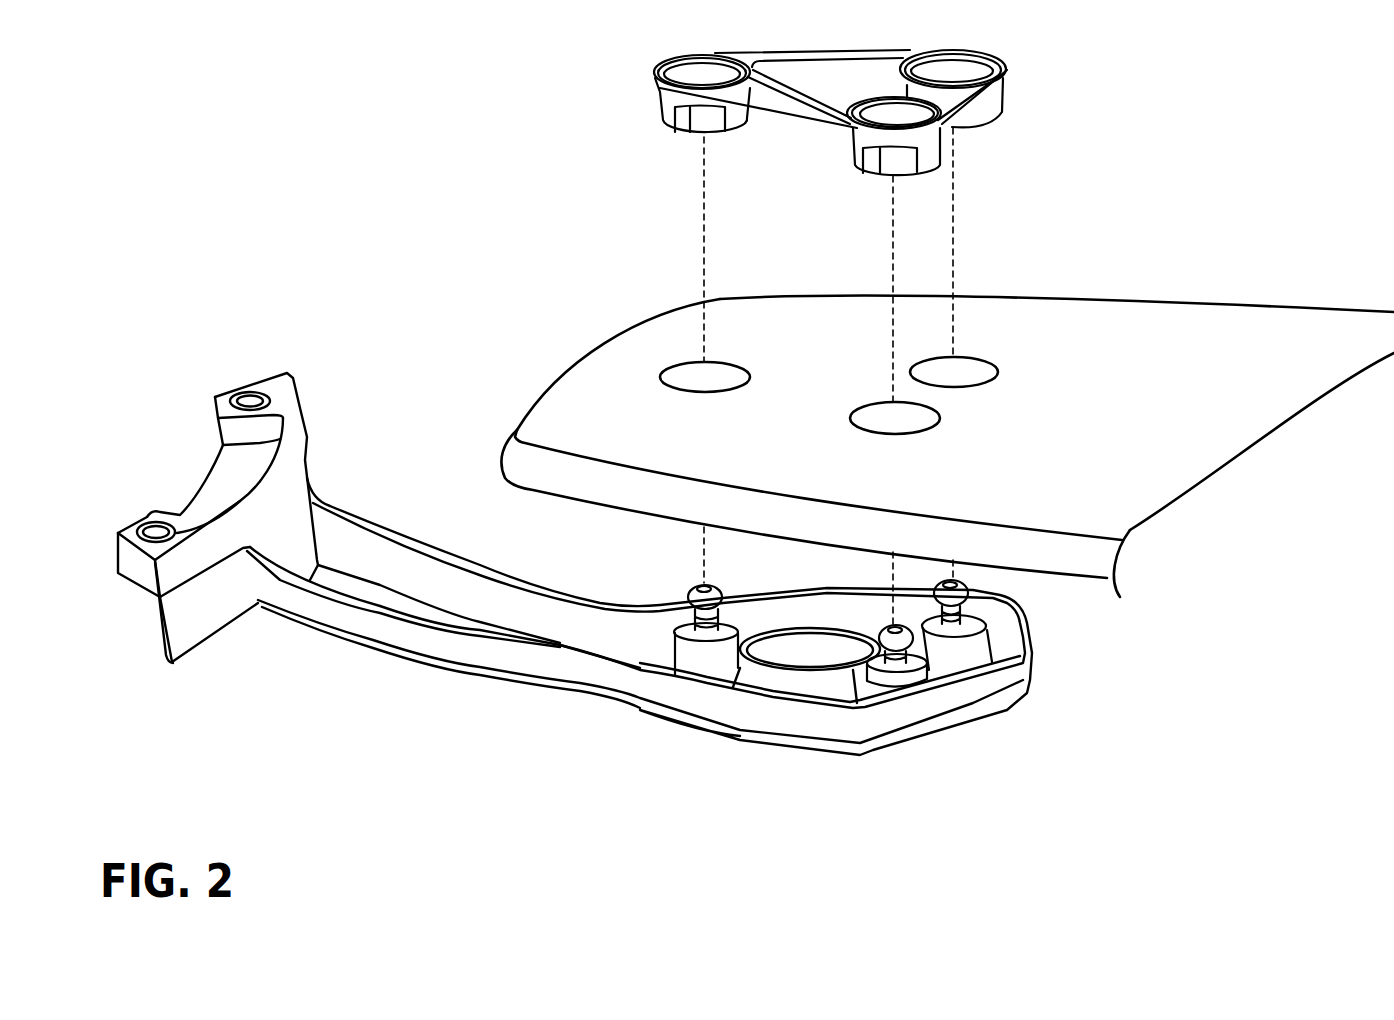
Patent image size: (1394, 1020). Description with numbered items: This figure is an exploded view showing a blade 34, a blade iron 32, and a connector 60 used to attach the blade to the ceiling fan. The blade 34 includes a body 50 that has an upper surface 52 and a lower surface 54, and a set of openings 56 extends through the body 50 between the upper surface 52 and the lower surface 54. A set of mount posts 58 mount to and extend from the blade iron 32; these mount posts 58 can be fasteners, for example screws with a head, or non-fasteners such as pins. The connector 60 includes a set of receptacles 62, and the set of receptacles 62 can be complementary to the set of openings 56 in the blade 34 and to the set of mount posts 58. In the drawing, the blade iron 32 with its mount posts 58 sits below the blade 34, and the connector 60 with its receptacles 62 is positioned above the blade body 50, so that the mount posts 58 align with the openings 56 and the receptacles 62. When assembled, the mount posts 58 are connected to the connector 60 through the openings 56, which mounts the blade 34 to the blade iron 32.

The blade iron 32 is at (628, 598).
The blade 34 is at (947, 449).
The body 50 is at (954, 375).
The upper surface 52 is at (1100, 537).
The lower surface 54 is at (1078, 573).
The set of openings 56 is at (657, 375).
The set of mount posts 58 is at (677, 635).
The connector 60 is at (829, 160).
The set of receptacles 62 is at (667, 125).